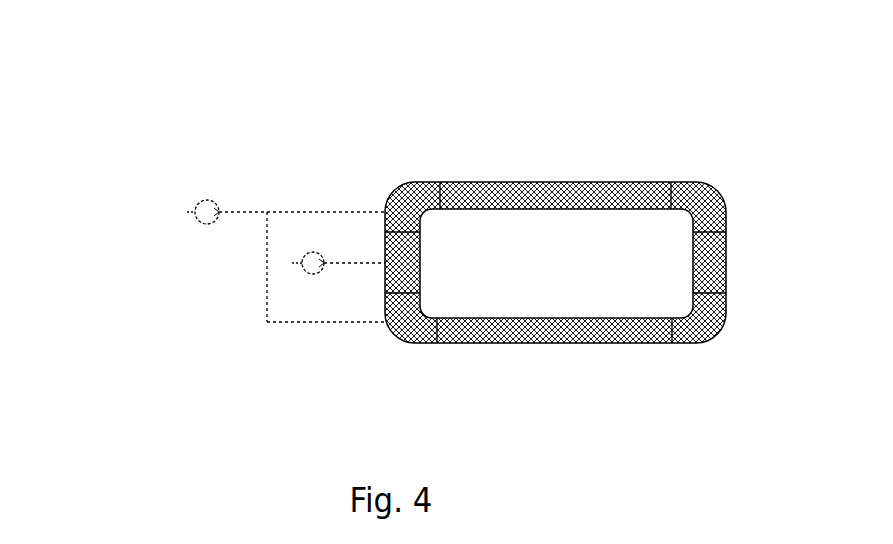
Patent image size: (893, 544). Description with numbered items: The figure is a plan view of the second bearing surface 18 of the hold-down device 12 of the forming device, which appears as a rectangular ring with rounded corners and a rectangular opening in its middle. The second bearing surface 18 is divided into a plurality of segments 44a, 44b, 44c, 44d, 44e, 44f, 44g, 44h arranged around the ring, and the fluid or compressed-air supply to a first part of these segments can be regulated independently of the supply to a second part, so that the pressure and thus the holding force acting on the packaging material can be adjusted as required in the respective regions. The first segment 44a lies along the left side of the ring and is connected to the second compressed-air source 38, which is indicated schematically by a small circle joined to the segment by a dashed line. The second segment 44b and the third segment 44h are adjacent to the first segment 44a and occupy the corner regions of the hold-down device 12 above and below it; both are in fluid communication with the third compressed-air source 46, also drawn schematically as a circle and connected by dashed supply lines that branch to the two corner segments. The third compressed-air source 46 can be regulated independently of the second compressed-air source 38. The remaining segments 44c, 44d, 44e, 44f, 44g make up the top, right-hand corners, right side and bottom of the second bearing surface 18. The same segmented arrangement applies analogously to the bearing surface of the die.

The hold-down device 12 is at (628, 182).
The second bearing surface 18 is at (481, 182).
The second compressed-air source 38 is at (307, 274).
The third compressed-air source 46 is at (200, 200).
The first segment 44a is at (388, 277).
The second segment 44b is at (416, 182).
The segment 44c is at (551, 182).
The segment 44d is at (690, 185).
The segment 44e is at (717, 260).
The segment 44f is at (692, 343).
The segment 44g is at (552, 343).
The third segment 44h is at (413, 343).